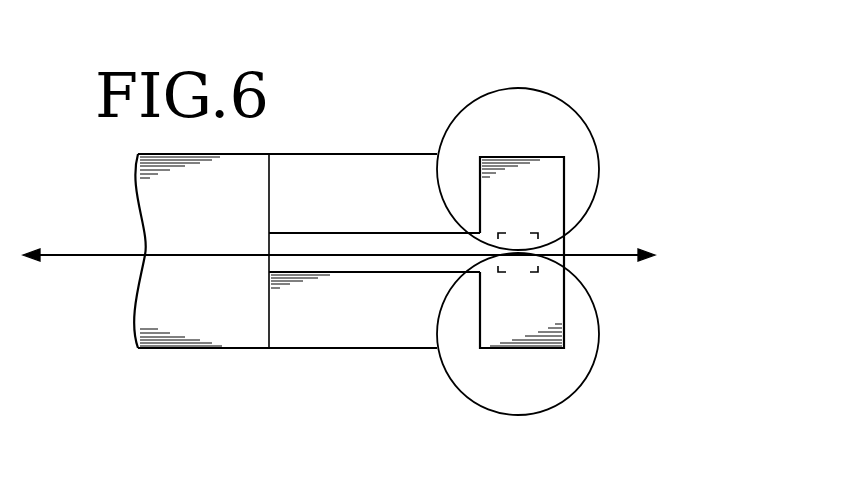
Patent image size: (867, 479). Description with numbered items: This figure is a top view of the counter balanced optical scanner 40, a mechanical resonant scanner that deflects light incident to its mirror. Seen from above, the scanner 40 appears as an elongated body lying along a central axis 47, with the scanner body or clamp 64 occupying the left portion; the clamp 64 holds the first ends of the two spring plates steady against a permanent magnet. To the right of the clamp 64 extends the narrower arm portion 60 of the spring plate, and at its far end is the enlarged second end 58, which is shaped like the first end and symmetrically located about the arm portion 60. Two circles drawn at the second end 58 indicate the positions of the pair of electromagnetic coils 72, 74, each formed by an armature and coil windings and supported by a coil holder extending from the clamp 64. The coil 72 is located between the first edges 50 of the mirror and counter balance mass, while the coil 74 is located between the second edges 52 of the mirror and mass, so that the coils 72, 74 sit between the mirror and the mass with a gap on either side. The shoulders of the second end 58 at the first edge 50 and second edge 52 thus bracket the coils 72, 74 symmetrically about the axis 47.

The counter balanced optical scanner 40 is at (454, 233).
The longitudinal axis 47 is at (620, 250).
The first edge 50 is at (500, 157).
The second edge 52 is at (502, 349).
The second end 58 is at (565, 190).
The arm portion 60 is at (339, 232).
The clamp 64 is at (212, 348).
The electromagnetic coil 72 is at (528, 88).
The electromagnetic coil 74 is at (598, 367).